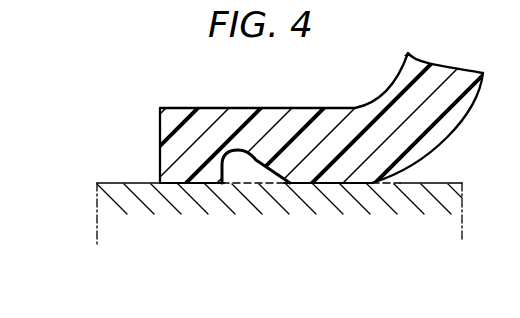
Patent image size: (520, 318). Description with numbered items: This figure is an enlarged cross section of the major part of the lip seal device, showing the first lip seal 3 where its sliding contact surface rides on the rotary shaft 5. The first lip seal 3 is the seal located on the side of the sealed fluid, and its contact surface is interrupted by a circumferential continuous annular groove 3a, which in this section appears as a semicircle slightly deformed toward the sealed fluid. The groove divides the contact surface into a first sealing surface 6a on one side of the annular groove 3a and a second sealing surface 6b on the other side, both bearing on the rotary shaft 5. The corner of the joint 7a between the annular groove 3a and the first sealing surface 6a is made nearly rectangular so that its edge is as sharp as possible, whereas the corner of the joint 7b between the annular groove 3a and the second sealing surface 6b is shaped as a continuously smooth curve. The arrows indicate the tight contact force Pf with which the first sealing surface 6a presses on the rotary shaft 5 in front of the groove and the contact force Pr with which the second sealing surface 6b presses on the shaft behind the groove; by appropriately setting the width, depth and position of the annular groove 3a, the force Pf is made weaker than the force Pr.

The first lip seal 3 is at (383, 95).
The annular groove 3a is at (245, 154).
The rotary shaft 5 is at (420, 183).
The first sealing surface 6a is at (180, 185).
The second sealing surface 6b is at (325, 185).
The corner of the joint 7a is at (218, 185).
The corner of the joint 7b is at (290, 185).
The tight contact force Pf is at (215, 183).
The contact force Pr is at (296, 183).